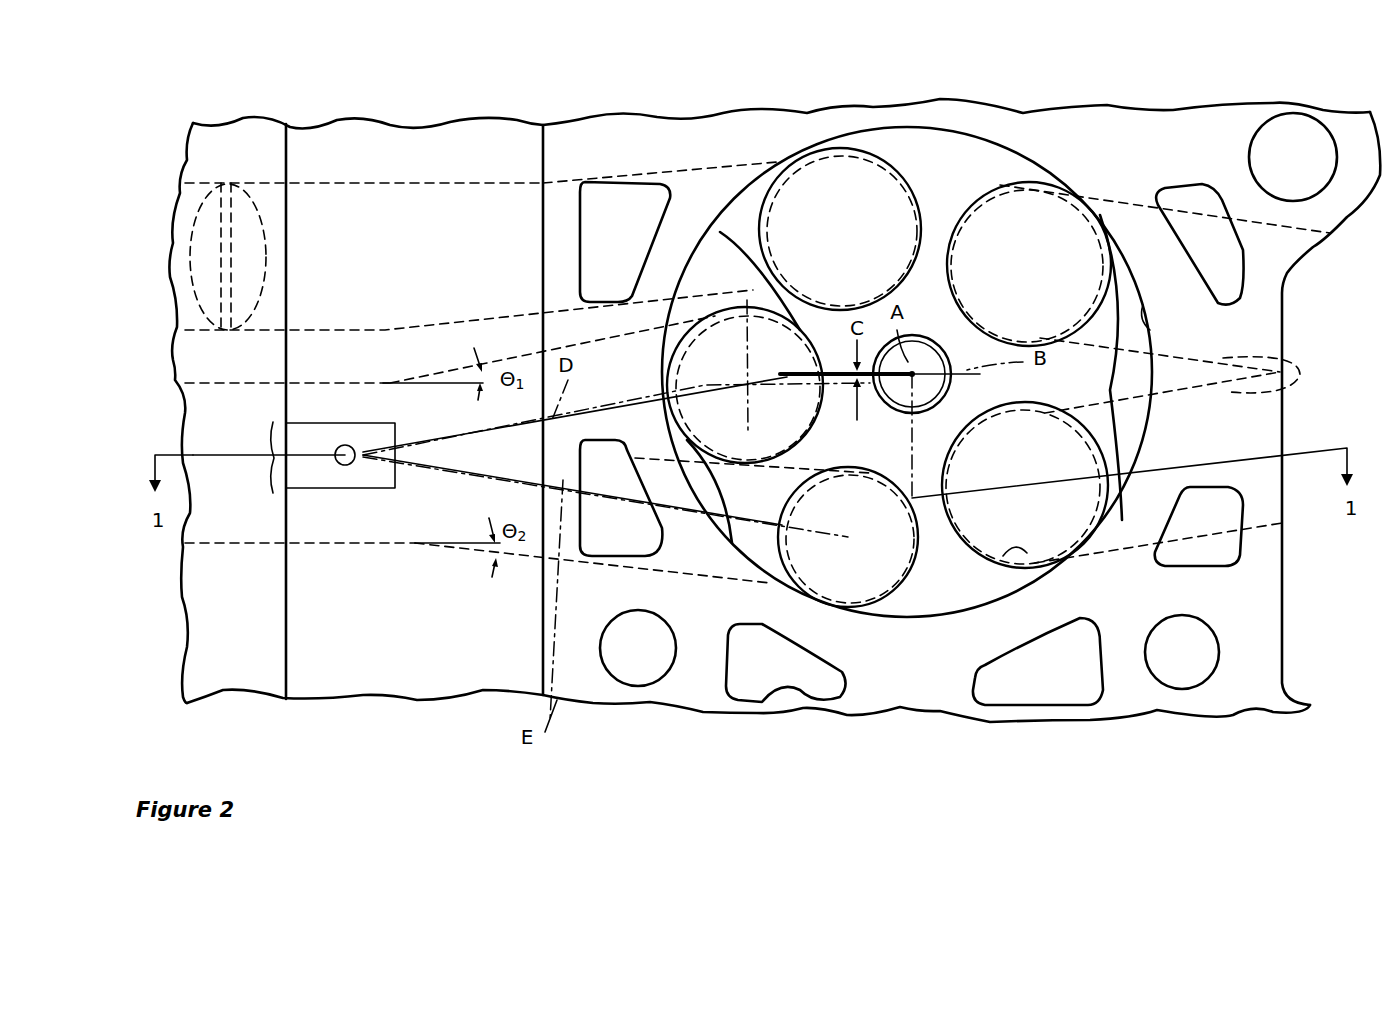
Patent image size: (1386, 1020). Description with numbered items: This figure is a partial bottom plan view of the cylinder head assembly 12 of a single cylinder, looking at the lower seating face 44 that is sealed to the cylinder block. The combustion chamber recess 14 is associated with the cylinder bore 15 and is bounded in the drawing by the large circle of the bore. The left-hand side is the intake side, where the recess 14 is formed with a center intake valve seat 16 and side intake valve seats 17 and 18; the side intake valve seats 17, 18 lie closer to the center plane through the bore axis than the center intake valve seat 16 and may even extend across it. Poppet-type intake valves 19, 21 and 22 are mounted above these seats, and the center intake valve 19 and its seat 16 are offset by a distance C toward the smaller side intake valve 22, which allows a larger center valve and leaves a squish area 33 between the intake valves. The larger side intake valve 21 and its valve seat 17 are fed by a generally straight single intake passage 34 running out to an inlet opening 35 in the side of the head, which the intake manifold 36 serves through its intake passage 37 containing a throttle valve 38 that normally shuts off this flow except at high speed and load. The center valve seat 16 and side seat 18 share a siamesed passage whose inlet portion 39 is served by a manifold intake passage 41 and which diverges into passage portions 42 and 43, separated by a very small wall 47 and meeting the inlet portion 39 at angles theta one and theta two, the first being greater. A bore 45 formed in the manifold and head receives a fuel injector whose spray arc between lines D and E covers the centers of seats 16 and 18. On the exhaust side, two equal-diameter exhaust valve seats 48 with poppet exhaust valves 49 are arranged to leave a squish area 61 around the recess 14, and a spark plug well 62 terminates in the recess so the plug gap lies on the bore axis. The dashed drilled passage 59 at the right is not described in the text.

The cylinder head assembly 12 is at (485, 680).
The combustion chamber recess 14 is at (884, 452).
The cylinder bore 15 is at (1153, 333).
The center intake valve seat 16 is at (763, 325).
The side intake valve seat 17 is at (893, 160).
The side intake valve seat 18 is at (878, 598).
The center intake valve 19 is at (782, 432).
The side intake valve 21 is at (808, 172).
The side intake valve 22 is at (860, 595).
The squish area 33 is at (720, 232).
The intake passage 34 is at (673, 280).
The inlet opening 35 is at (297, 195).
The intake manifold 36 is at (223, 682).
The intake passage 37 is at (192, 328).
The throttle valve 38 is at (255, 198).
The inlet portion 39 is at (300, 545).
The intake passage 41 is at (205, 385).
The passage portion 42 is at (597, 342).
The passage portion 43 is at (730, 572).
The lower seating face 44 is at (560, 165).
The bore 45 is at (303, 490).
The wall 47 is at (665, 458).
The exhaust valve seats 48 is at (1040, 183).
The exhaust valves 49 is at (1068, 225).
The drilled passage tip 59 is at (1287, 388).
The squish area 61 is at (1133, 450).
The spark plug well 62 is at (945, 360).